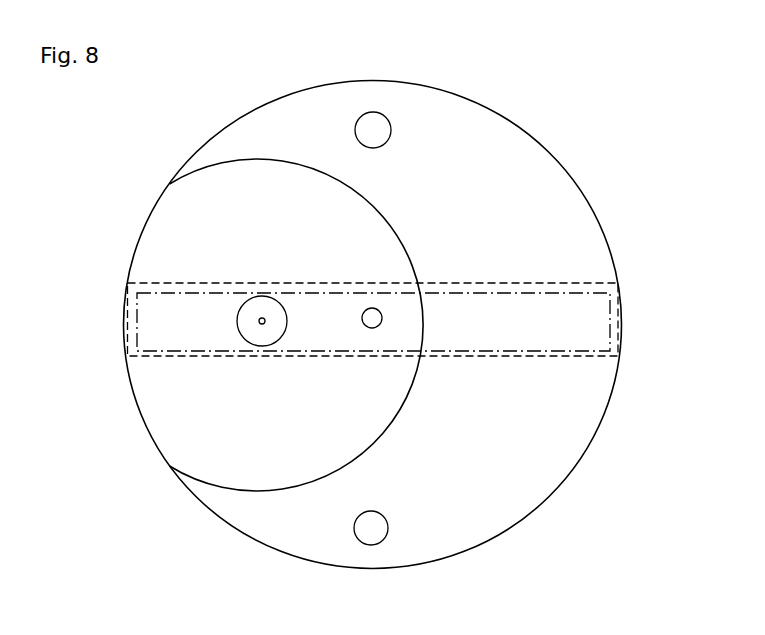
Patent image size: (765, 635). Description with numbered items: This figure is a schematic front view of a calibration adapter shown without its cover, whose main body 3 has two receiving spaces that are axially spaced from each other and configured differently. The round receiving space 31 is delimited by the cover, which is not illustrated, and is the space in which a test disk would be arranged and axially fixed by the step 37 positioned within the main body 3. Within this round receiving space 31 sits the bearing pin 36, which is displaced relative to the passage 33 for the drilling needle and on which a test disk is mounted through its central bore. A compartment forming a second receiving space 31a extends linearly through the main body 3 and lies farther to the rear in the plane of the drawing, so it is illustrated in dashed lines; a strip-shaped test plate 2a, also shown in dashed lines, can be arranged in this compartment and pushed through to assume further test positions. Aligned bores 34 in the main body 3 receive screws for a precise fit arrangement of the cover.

The main body 3 is at (288, 102).
The receiving space 31 is at (143, 264).
The second receiving space 31a is at (575, 278).
The test plate 2a is at (605, 316).
The passage 33 is at (370, 313).
The bores 34 is at (378, 122).
The bearing pin 36 is at (260, 319).
The step 37 is at (262, 337).